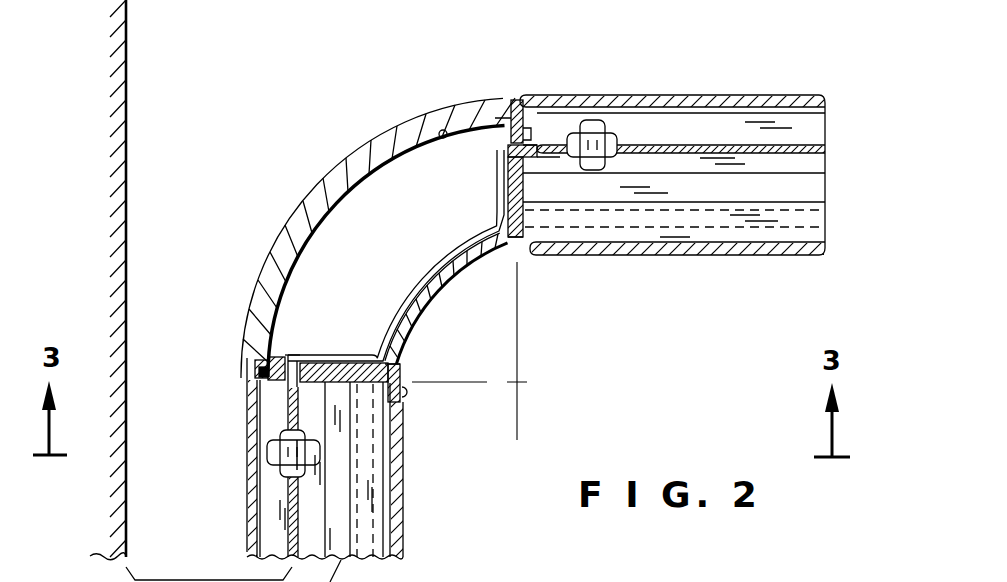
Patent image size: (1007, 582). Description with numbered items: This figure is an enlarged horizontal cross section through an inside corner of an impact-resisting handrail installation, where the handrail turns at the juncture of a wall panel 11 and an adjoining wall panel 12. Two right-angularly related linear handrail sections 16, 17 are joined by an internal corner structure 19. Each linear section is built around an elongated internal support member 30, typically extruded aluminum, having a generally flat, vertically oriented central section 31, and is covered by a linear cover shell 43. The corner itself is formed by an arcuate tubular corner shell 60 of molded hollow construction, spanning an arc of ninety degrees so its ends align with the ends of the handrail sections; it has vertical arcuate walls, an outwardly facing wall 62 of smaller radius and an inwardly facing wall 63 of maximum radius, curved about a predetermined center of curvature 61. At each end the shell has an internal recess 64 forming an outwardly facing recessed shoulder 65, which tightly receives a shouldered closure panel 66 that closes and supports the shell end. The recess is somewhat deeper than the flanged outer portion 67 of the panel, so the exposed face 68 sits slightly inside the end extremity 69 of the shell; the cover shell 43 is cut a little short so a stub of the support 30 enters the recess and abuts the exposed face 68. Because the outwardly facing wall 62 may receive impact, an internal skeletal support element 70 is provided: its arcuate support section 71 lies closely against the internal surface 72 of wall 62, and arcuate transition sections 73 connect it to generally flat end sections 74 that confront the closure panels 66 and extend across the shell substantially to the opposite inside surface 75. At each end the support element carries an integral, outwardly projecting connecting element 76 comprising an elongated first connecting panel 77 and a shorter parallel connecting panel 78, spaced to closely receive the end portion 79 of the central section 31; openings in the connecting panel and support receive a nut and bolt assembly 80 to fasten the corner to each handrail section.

The wall panel 11 is at (126, 275).
The wall panel 12 is at (333, 0).
The linear handrail section 16 is at (415, 522).
The linear handrail section 17 is at (495, 311).
The internal corner structure 19 is at (360, 255).
The internal support member 30 is at (806, 191).
The central section 31 is at (648, 145).
The linear cover shell 43 is at (659, 256).
The tubular corner shell 60 is at (446, 298).
The center of curvature 61 is at (532, 374).
The arcuate wall of smaller radius 62 is at (488, 262).
The arcuate wall of maximum radius 63 is at (366, 146).
The internal recess 64 is at (364, 211).
The recessed shoulder 65 is at (490, 97).
The shouldered closure panel 66 is at (402, 263).
The flanged outer portion 67 is at (410, 360).
The exposed face 68 is at (388, 385).
The end extremity 69 is at (408, 395).
The internal skeletal support element 70 is at (374, 256).
The arcuate support section 71 is at (396, 268).
The internal surface 72 is at (522, 260).
The arcuate transition section 73 is at (495, 220).
The end section 74 is at (506, 170).
The opposite inside surface 75 is at (440, 130).
The connecting element 76 is at (530, 145).
The first connecting panel 77 is at (465, 314).
The second connecting panel 78 is at (555, 150).
The end portion 79 is at (292, 452).
The nut and bolt assembly 80 is at (600, 172).